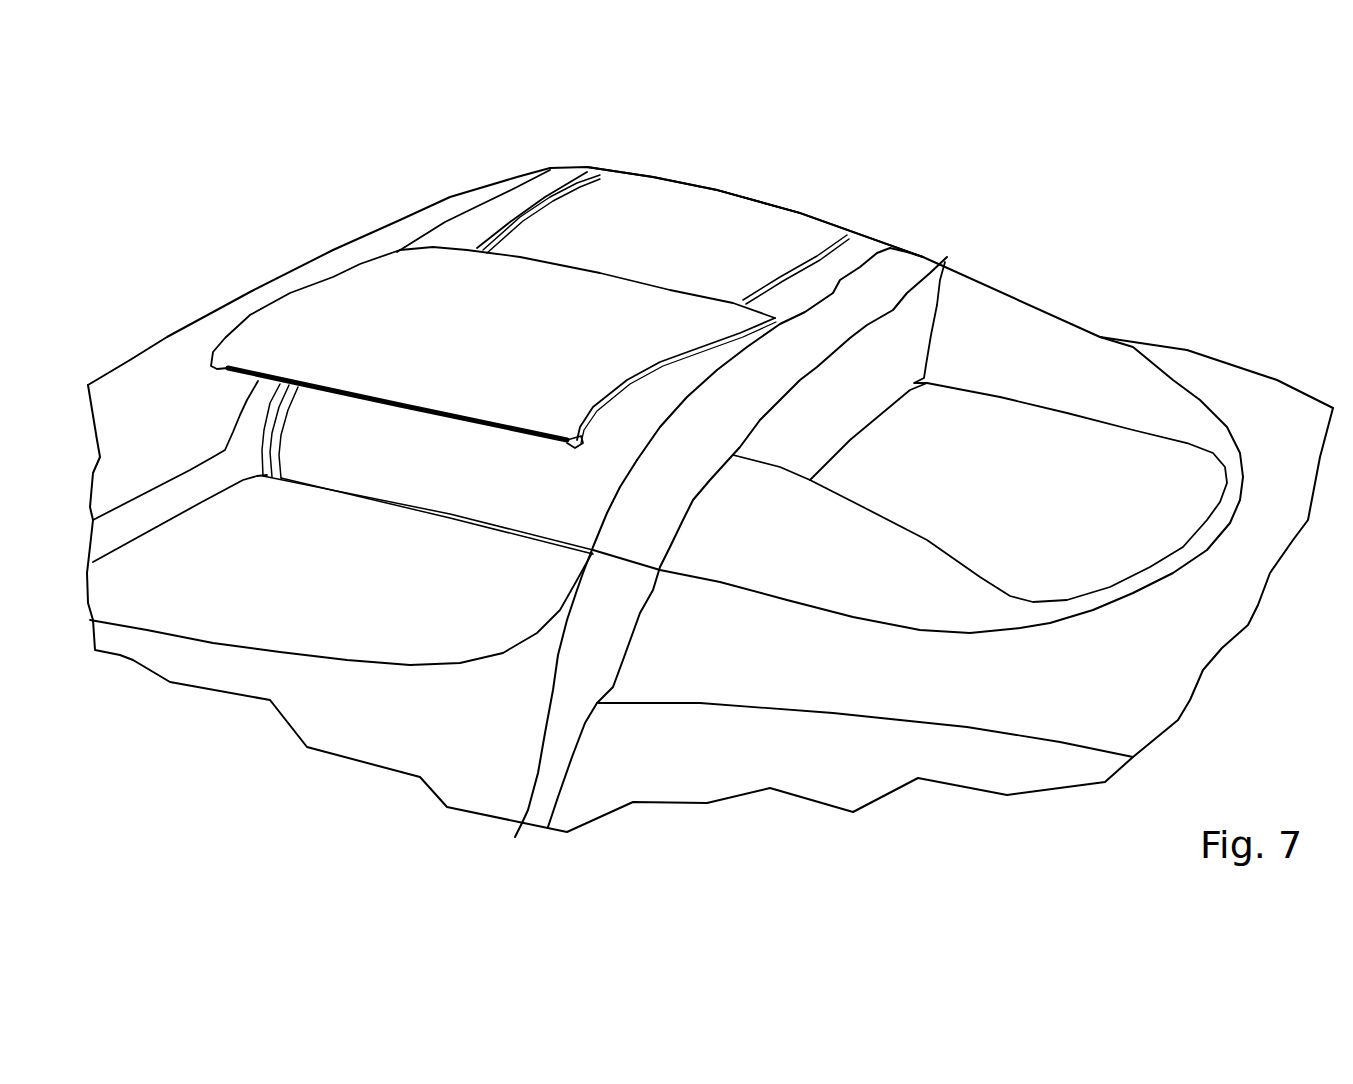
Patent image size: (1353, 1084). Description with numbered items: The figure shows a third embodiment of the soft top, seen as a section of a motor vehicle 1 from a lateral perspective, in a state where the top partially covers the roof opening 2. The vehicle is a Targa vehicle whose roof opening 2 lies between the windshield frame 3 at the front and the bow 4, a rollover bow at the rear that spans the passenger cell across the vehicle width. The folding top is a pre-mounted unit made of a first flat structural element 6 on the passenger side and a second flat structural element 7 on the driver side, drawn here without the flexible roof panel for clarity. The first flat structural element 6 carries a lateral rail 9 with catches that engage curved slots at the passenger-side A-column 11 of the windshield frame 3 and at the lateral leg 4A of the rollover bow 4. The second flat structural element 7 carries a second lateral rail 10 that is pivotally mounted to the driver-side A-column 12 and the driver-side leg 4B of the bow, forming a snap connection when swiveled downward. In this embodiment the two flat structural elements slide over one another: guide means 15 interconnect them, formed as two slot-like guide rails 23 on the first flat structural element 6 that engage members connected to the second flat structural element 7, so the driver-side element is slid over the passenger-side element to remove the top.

The motor vehicle 1 is at (178, 350).
The roof opening 2 is at (843, 287).
The windshield frame 3 is at (445, 222).
The bow 4 is at (877, 292).
The lateral leg of the rollover bow 4A is at (923, 257).
The driver-side leg of the rollover bow 4B is at (607, 598).
The first flat structural element 6 is at (768, 230).
The second flat structural element 7 is at (330, 315).
The lateral rail 9 is at (717, 190).
The second lateral rail 10 is at (228, 368).
The passenger-side A-column 11 is at (550, 167).
The driver-side A-column 12 is at (209, 480).
The guide means 15 is at (713, 352).
The guide rails 23 is at (574, 185).